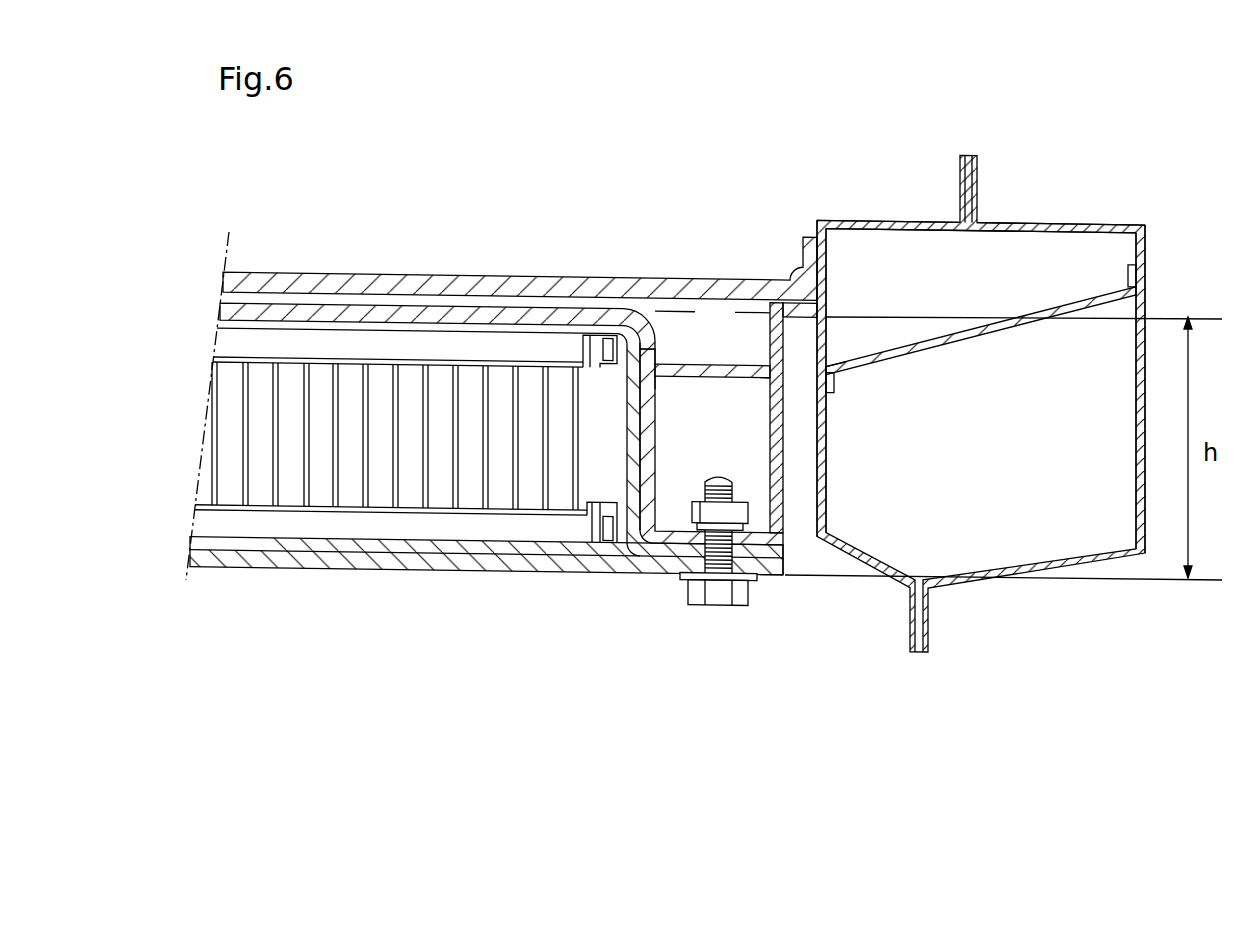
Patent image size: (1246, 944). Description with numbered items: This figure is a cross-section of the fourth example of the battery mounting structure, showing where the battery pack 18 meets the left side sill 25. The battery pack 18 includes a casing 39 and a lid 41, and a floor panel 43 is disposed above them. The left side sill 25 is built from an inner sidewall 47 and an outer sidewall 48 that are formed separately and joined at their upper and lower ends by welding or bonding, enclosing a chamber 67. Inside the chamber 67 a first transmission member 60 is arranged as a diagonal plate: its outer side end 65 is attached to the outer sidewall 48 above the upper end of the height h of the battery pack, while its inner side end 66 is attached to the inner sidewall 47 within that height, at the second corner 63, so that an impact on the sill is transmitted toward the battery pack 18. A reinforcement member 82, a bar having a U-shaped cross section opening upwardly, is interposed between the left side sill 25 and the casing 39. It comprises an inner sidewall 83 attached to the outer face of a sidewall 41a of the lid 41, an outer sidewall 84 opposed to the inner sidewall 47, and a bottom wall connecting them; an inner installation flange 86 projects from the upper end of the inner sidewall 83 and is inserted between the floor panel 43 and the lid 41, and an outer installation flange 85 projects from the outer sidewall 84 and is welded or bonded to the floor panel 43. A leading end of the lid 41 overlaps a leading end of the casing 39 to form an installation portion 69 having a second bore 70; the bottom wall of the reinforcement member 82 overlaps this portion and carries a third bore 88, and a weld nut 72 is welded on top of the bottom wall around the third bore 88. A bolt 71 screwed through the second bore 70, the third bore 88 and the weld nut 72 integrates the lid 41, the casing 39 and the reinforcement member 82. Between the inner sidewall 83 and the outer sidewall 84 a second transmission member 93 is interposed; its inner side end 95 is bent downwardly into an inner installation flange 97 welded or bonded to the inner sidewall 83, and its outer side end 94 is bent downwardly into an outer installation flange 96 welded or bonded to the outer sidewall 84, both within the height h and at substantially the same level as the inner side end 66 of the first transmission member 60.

The battery pack 18 is at (398, 592).
The left side sill 25 is at (1062, 185).
The casing 39 is at (292, 572).
The lid 41 is at (457, 308).
The sidewall of the lid 41a is at (646, 550).
The floor panel 43 is at (363, 273).
The inner sidewall 47 is at (825, 440).
The outer sidewall 48 is at (1133, 440).
The first transmission member 60 is at (953, 343).
The second corner 63 is at (830, 367).
The outer side end 65 is at (1147, 290).
The inner side end 66 is at (834, 385).
The chamber 67 is at (1100, 250).
The installation portion 69 is at (773, 576).
The second bore 70 is at (721, 604).
The bolt 71 is at (698, 592).
The weld nut 72 is at (743, 503).
The reinforcement member 82 is at (789, 552).
The inner sidewall of the reinforcement member 83 is at (655, 315).
The outer sidewall of the reinforcement member 84 is at (783, 400).
The outer installation flange 85 is at (830, 313).
The inner installation flange 86 is at (563, 302).
The third bore 88 is at (703, 503).
The second transmission member 93 is at (712, 315).
The outer side end of the second transmission member 94 is at (765, 368).
The inner side end of the second transmission member 95 is at (663, 368).
The outer installation flange of the second transmission member 96 is at (760, 388).
The inner installation flange of the second transmission member 97 is at (663, 388).